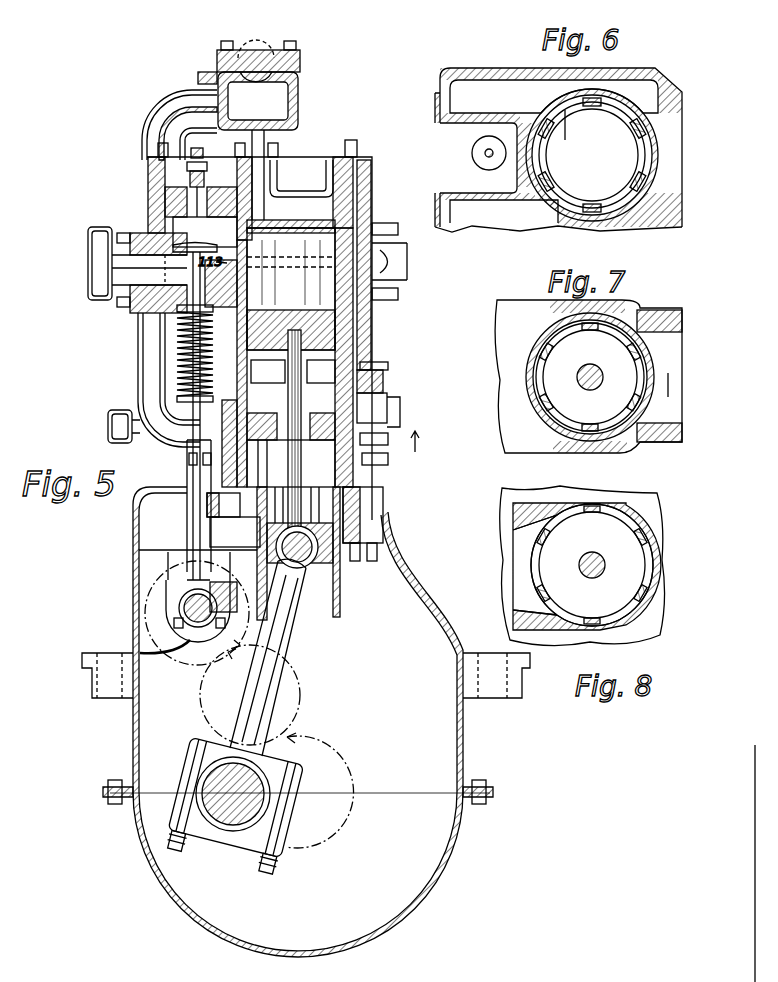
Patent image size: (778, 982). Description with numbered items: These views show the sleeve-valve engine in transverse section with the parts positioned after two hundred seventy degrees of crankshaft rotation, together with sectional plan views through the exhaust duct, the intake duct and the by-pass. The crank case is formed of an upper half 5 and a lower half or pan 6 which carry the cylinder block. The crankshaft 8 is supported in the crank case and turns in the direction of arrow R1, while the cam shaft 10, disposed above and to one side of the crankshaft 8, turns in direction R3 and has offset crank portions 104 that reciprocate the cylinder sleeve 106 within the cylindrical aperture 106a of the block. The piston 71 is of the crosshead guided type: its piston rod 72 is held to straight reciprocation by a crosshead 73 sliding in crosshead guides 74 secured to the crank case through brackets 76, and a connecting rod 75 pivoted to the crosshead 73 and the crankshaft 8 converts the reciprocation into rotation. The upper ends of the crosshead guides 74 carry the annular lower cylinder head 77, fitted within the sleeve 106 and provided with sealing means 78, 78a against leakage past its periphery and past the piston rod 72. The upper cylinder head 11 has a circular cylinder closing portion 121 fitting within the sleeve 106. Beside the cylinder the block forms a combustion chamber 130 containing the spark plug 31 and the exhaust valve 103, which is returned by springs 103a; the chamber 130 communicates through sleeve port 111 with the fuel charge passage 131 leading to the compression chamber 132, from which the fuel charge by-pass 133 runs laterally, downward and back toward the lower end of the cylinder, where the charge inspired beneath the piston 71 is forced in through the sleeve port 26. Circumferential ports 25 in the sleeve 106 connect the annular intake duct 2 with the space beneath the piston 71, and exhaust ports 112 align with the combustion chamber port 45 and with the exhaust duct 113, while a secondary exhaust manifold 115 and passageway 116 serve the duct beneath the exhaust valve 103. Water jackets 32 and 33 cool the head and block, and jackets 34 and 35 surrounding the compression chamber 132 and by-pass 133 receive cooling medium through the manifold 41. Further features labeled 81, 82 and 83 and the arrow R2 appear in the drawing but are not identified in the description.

In FIG. 5, the intake duct 2 is at (378, 410).
In FIG. 7, the intake duct 2 is at (510, 420).
In FIG. 5, the upper half of crank case 5 is at (133, 727).
In FIG. 5, the lower half or pan 6 is at (183, 904).
In FIG. 5, the crankshaft 8 is at (229, 850).
In FIG. 5, the cam shaft 10 is at (190, 606).
In FIG. 5, the cylinder head 11 is at (374, 170).
In FIG. 5, the circumferential ports 25 is at (268, 371).
In FIG. 7, the circumferential ports 25 is at (627, 334).
In FIG. 5, the port 26 is at (224, 505).
In FIG. 8, the port 26 is at (540, 566).
In FIG. 5, the spark plug 31 is at (187, 163).
In FIG. 5, the water jacket 32 is at (363, 213).
In FIG. 5, the water jacket 33 is at (402, 349).
In FIG. 6, the water jacket 33 is at (481, 95).
In FIG. 5, the water jacket 34 is at (258, 80).
In FIG. 5, the water jacket 35 is at (145, 128).
In FIG. 5, the manifold 41 is at (108, 418).
In FIG. 5, the combustion chamber port 45 is at (237, 242).
In FIG. 5, the piston 71 is at (333, 306).
In FIG. 5, the piston rod 72 is at (311, 430).
In FIG. 7, the piston rod 72 is at (590, 391).
In FIG. 8, the piston rod 72 is at (593, 579).
In FIG. 5, the crosshead 73 is at (348, 527).
In FIG. 5, the crosshead guides 74 is at (266, 603).
In FIG. 5, the connecting rod 75 is at (272, 646).
In FIG. 5, the brackets 76 is at (325, 562).
In FIG. 5, the annular cylinder head 77 is at (385, 384).
In FIG. 5, the sealing means 78 is at (291, 450).
In FIG. 5, the sealing means 78a is at (271, 437).
In FIG. 5, the crank 81 is at (330, 765).
In FIG. 5, the crank circle 82 is at (300, 680).
In FIG. 5, the casing wall 83 is at (160, 656).
In FIG. 5, the exhaust valve 103 is at (145, 313).
In FIG. 6, the exhaust valve 103 is at (489, 160).
In FIG. 5, the springs 103a is at (168, 348).
In FIG. 5, the offset crank portions 104 is at (188, 590).
In FIG. 5, the cylinder sleeve 106 is at (367, 333).
In FIG. 6, the cylinder sleeve 106 is at (553, 185).
In FIG. 7, the cylinder sleeve 106 is at (589, 331).
In FIG. 6, the cylindrical aperture 106a is at (645, 150).
In FIG. 7, the cylindrical aperture 106a is at (648, 365).
In FIG. 5, the port 111 is at (237, 227).
In FIG. 5, the ports 112 is at (330, 238).
In FIG. 6, the ports 112 is at (565, 138).
In FIG. 5, the exhaust duct 113 is at (385, 262).
In FIG. 6, the exhaust duct 113 is at (620, 92).
In FIG. 5, the secondary exhaust manifold 115 is at (100, 247).
In FIG. 5, the passageway 116 is at (147, 277).
In FIG. 6, the passageway 116 is at (492, 130).
In FIG. 5, the circular cylinder closing portion 121 is at (293, 221).
In FIG. 5, the combustion chamber 130 is at (180, 230).
In FIG. 5, the fuel charge passage 131 is at (266, 150).
In FIG. 5, the compression chamber 132 is at (282, 100).
In FIG. 5, the fuel charge by-pass 133 is at (181, 105).
In FIG. 8, the fuel charge by-pass 133 is at (525, 582).
In FIG. 5, the direction of crankshaft rotation R1 is at (320, 790).
In FIG. 5, the radius R2 is at (230, 663).
In FIG. 5, the direction of cam shaft rotation R3 is at (197, 613).